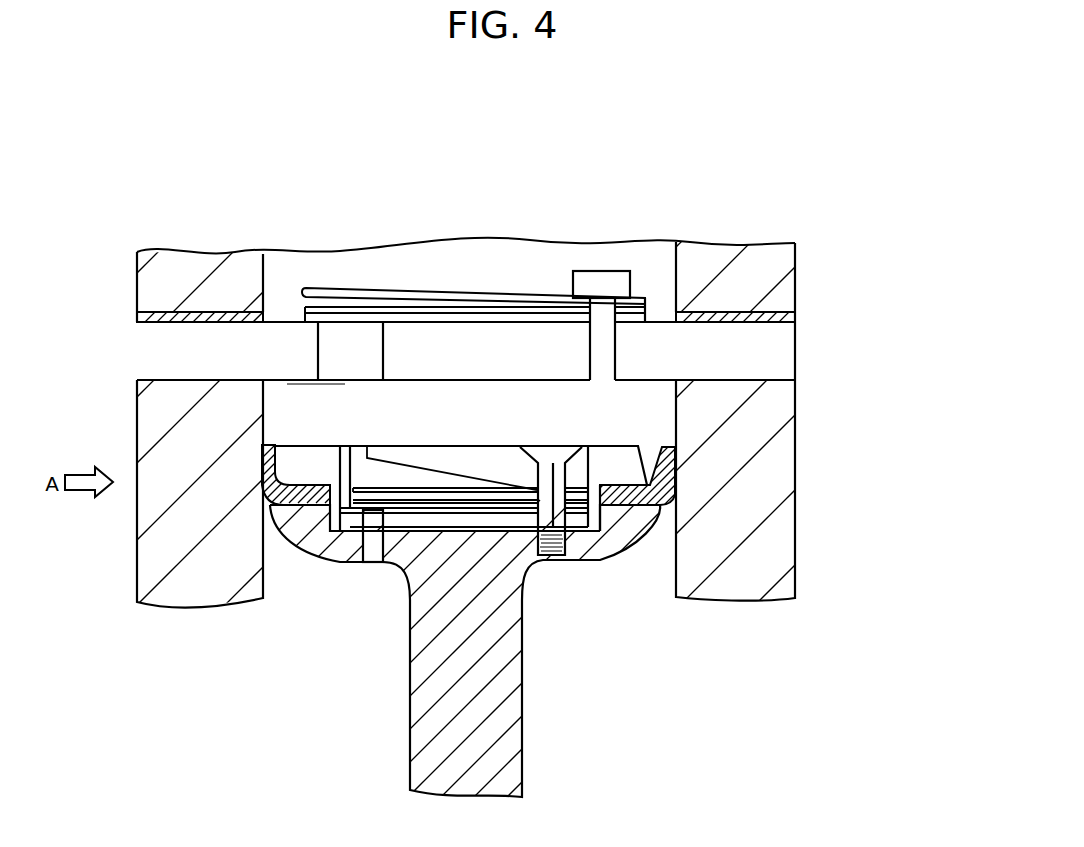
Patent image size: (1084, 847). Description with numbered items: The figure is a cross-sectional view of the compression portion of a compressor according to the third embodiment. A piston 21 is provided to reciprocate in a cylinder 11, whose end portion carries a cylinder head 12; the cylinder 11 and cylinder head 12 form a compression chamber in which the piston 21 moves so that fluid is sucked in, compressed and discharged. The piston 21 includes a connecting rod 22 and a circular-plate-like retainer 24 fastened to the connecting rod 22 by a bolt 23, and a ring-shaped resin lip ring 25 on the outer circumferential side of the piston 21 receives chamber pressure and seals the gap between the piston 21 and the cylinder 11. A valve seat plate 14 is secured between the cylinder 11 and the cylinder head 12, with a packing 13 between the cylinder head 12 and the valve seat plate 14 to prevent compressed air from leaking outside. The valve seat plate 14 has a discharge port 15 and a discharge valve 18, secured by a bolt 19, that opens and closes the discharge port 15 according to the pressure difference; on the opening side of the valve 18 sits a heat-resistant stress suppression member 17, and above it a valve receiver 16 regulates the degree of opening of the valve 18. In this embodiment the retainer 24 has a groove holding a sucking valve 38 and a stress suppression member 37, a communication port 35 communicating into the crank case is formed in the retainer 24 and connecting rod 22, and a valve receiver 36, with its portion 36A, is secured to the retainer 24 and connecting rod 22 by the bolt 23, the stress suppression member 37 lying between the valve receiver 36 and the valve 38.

The cylinder 11 is at (180, 593).
The cylinder head 12 is at (777, 280).
The packing 13 is at (777, 315).
The valve seat plate 14 is at (778, 358).
The discharge port 15 is at (315, 347).
The valve receiver 16 is at (313, 285).
The stress suppression member 17 is at (330, 291).
The discharge valve 18 is at (522, 318).
The bolt 19 is at (613, 270).
The piston 21 is at (312, 468).
The connecting rod 22 is at (523, 693).
The bolt 23 is at (558, 447).
The retainer 24 is at (328, 445).
The lip ring 25 is at (675, 473).
The communication port 35 is at (370, 563).
The valve receiver 36 is at (387, 445).
The sensor base plate 36A is at (427, 487).
The stress suppression member 37 is at (481, 510).
The sucking valve 38 is at (425, 510).